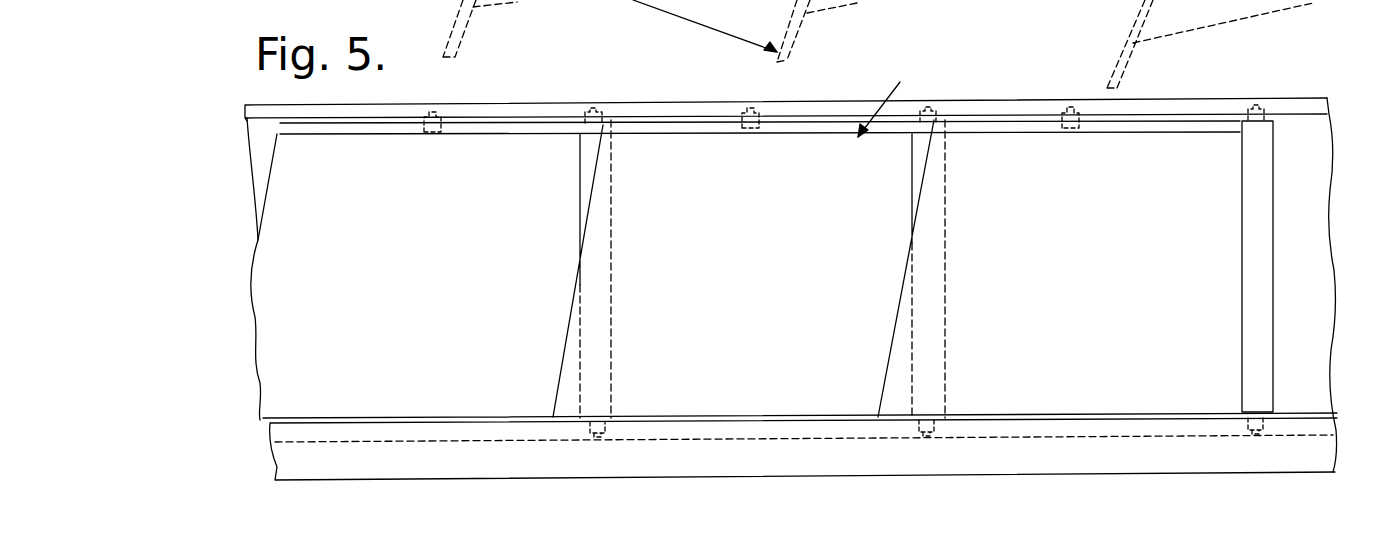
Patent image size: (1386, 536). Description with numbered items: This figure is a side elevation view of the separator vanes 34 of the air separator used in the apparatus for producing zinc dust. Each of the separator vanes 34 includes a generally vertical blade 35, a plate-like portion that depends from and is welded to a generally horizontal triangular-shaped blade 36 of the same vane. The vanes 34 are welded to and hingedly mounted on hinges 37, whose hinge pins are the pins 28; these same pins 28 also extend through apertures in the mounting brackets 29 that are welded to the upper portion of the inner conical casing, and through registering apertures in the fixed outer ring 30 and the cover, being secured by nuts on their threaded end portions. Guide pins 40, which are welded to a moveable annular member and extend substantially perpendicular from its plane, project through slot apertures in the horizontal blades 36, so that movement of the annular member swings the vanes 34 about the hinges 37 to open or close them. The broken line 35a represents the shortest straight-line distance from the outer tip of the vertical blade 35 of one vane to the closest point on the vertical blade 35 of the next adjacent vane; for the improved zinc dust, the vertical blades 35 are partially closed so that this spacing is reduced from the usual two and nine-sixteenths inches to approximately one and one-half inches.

The pins 28 is at (600, 105).
The mounting brackets 29 is at (800, 469).
The fixed outer ring 30 is at (397, 110).
The separator vanes 34 is at (886, 97).
The generally vertical blade 35 is at (440, 287).
The broken line 35a is at (627, 3).
The generally horizontal triangular-shaped blade 36 is at (507, 135).
The hinges 37 is at (585, 175).
The guide pins 40 is at (440, 110).